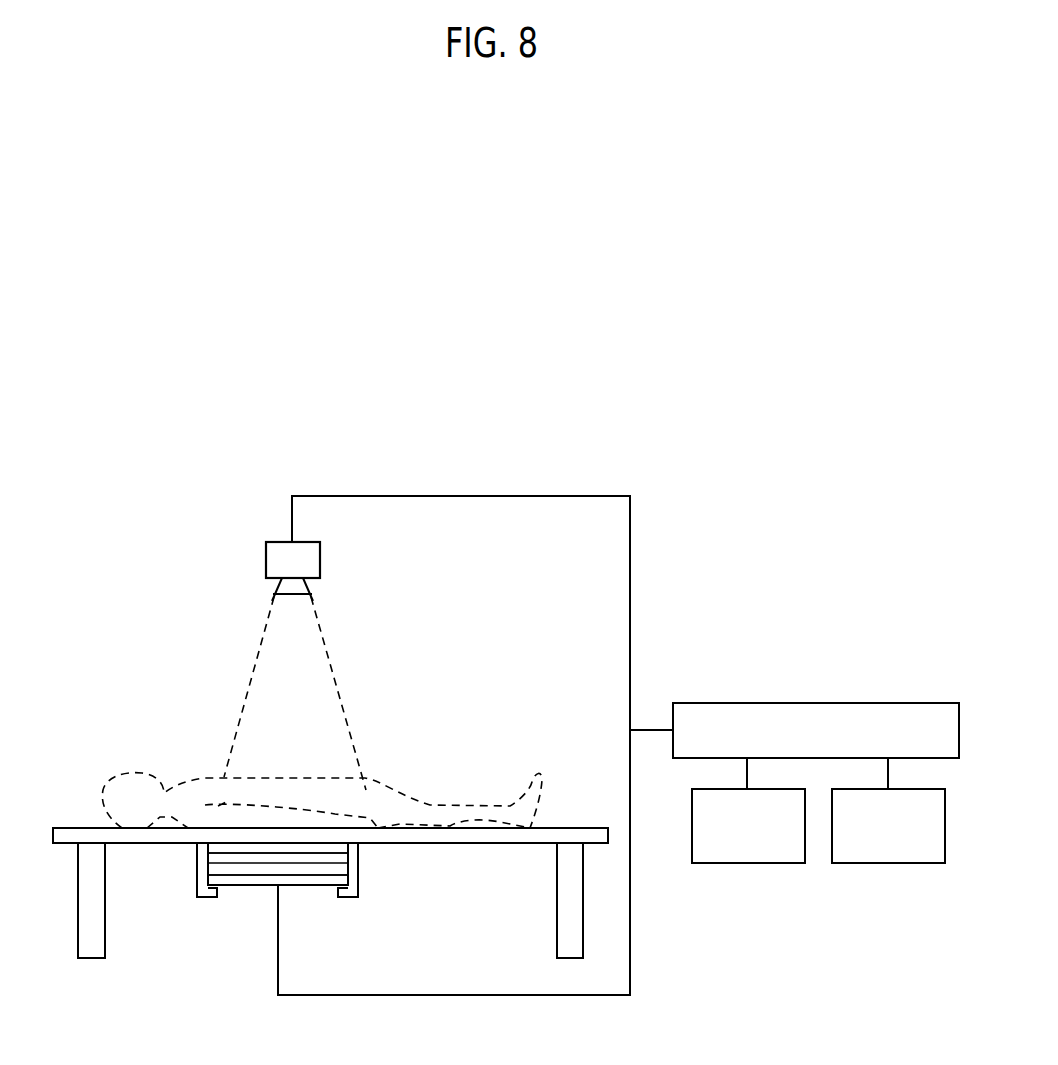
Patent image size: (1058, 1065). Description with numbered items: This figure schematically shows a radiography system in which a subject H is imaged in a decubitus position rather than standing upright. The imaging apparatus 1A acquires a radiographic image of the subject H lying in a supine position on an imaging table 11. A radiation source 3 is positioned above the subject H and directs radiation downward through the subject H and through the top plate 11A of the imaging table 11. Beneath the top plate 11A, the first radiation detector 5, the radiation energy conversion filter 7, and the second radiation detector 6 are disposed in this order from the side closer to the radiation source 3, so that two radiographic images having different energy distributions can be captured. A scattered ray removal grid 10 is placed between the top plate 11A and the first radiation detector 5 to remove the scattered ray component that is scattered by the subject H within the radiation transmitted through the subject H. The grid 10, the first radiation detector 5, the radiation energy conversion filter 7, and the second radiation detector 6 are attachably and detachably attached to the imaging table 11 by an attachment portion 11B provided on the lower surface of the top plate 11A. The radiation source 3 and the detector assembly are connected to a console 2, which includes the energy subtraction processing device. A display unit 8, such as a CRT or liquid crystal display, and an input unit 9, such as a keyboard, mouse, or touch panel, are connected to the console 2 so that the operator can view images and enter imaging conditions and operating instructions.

The imaging apparatus 1A is at (182, 576).
The console 2 is at (936, 702).
The radiation source 3 is at (320, 559).
The first radiation detector 5 is at (343, 862).
The second radiation detector 6 is at (330, 882).
The radiation energy conversion filter 7 is at (343, 873).
The display unit 8 is at (772, 864).
The input unit 9 is at (915, 864).
The scattered ray removal grid 10 is at (226, 848).
The imaging table 11 is at (105, 928).
The top plate 11A is at (63, 827).
The attachment portion 11B is at (358, 849).
The subject H is at (118, 775).